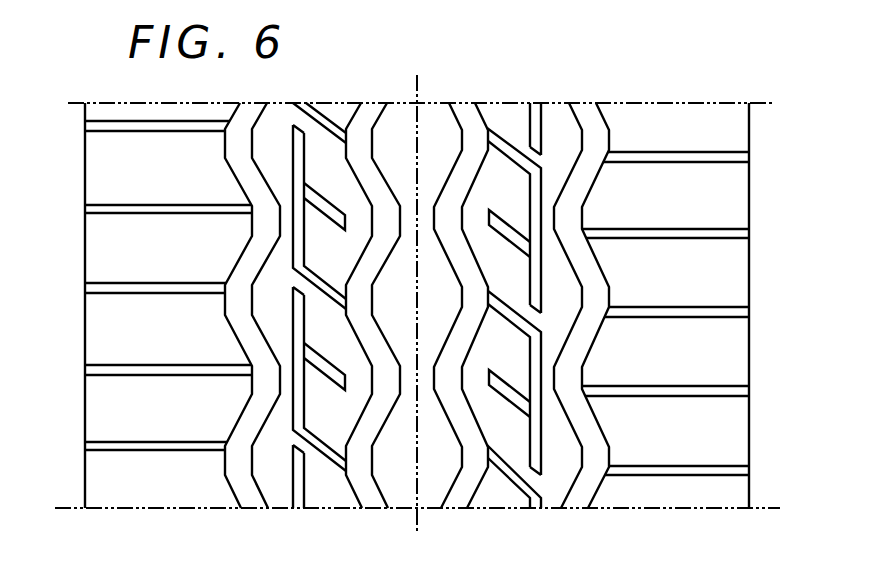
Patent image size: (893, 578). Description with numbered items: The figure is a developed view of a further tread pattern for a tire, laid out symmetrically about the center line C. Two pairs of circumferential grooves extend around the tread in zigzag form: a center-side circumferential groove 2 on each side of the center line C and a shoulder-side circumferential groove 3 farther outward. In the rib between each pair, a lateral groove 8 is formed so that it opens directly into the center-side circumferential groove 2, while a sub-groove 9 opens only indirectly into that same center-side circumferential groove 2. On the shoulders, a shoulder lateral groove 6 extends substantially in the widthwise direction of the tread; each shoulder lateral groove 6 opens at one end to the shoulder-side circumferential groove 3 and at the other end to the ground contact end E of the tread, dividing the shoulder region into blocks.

The center-side circumferential groove 2 is at (372, 500).
The shoulder-side circumferential groove 3 is at (247, 498).
The shoulder lateral groove 6 is at (147, 367).
The lateral groove 8 is at (301, 398).
The sub-groove 9 is at (329, 373).
The tire equator C is at (418, 293).
The ground contact end E is at (85, 407).